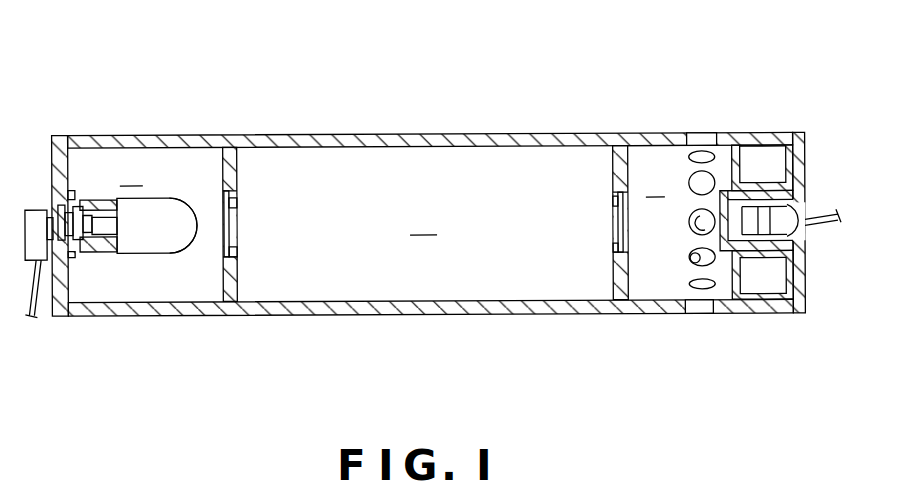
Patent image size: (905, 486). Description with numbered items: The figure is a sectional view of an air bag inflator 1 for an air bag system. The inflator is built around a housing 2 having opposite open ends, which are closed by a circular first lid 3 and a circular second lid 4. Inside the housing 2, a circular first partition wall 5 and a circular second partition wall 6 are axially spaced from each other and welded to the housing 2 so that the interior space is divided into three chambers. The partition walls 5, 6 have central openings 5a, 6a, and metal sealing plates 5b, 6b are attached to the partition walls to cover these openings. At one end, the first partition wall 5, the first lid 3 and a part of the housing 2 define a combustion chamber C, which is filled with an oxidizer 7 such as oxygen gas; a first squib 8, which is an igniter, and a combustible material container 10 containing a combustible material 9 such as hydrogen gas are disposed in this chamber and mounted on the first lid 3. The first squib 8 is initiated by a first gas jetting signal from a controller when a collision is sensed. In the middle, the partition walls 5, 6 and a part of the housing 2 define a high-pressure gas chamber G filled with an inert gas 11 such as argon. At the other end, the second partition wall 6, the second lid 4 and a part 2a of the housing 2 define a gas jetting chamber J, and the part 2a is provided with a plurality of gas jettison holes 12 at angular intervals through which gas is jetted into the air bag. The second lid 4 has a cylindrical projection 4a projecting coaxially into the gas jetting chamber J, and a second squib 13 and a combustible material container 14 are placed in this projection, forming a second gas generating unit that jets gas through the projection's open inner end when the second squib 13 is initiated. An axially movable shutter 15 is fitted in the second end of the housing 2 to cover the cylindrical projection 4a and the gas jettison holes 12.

The air bag inflator 1 is at (366, 112).
The housing 2 is at (455, 136).
The part of the housing 2a is at (648, 135).
The first lid 3 is at (55, 152).
The second lid 4 is at (806, 141).
The cylindrical projection 4a is at (699, 205).
The first partition wall 5 is at (237, 171).
The central opening 5a is at (237, 214).
The metal sealing plate 5b is at (237, 237).
The second partition wall 6 is at (613, 171).
The central opening 6a is at (617, 204).
The metal sealing plate 6b is at (618, 234).
The oxidizer 7 is at (158, 286).
The first squib 8 is at (78, 251).
The combustible material 9 is at (160, 207).
The combustible material container 10 is at (193, 211).
The inert gas 11 is at (426, 287).
The gas jettison holes 12 is at (690, 248).
The second squib 13 is at (790, 229).
The combustible material container 14 is at (756, 212).
The axially movable shutter 15 is at (751, 297).